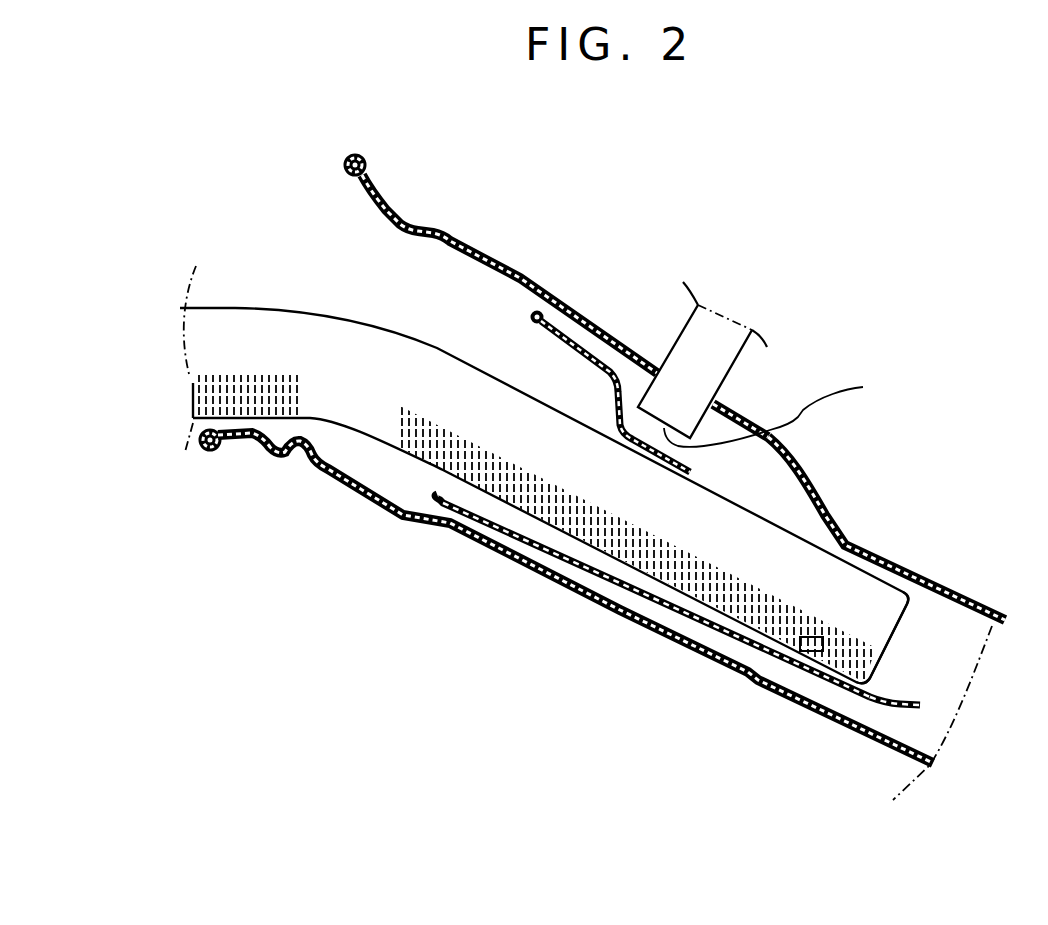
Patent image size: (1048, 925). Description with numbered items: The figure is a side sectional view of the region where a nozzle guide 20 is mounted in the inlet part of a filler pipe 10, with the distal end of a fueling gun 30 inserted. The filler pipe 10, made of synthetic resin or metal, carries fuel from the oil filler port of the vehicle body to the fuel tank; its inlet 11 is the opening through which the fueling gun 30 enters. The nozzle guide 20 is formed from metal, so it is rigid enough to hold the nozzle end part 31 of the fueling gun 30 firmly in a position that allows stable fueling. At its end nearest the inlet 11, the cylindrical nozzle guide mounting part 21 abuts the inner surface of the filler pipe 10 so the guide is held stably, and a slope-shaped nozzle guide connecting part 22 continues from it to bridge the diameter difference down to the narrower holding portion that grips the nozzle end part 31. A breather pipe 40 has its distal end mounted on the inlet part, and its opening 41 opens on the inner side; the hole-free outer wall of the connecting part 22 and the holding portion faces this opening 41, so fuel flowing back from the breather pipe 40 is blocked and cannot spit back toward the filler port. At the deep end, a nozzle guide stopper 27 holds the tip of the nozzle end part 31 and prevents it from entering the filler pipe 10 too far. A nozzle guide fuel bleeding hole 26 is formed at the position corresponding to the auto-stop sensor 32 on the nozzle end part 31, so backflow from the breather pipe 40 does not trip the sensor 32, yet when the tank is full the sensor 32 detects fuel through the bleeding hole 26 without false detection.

The filler pipe 10 is at (968, 590).
The inlet 11 is at (338, 156).
The nozzle guide 20 is at (650, 620).
The nozzle guide mounting part 21 is at (550, 335).
The nozzle guide connecting part 22 is at (612, 408).
The nozzle guide fuel bleeding hole 26 is at (743, 647).
The nozzle guide stopper 27 is at (905, 713).
The fueling gun 30 is at (256, 294).
The nozzle end part 31 is at (878, 612).
The auto-stop sensor 32 is at (822, 632).
The breather pipe 40 is at (672, 330).
The opening 41 is at (780, 410).